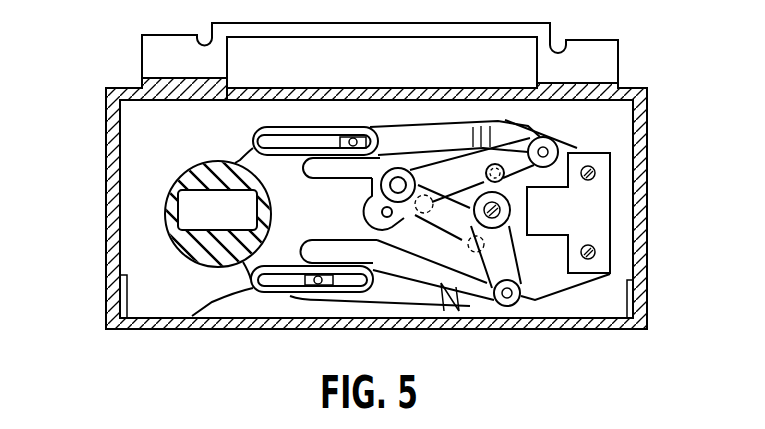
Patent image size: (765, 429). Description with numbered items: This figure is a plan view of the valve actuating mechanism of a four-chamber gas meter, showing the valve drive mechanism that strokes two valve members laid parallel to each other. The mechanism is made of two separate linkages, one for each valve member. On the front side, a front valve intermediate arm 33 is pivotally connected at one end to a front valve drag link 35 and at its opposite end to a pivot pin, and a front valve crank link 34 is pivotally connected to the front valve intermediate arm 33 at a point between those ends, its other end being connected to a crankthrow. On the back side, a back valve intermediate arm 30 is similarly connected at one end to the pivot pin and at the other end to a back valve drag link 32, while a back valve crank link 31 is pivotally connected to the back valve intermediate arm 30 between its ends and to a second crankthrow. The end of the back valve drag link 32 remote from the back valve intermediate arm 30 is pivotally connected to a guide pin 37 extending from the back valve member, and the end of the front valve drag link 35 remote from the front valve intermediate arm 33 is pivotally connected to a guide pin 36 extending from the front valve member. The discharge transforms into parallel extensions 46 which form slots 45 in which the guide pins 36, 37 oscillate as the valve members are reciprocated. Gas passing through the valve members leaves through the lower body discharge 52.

The back valve intermediate arm 30 is at (493, 262).
The back valve crank link 31 is at (452, 228).
The back valve drag link 32 is at (400, 292).
The front valve intermediate arm 33 is at (530, 142).
The front valve crank link 34 is at (457, 180).
The front valve drag link 35 is at (407, 142).
The guide pin 36 is at (356, 141).
The guide pin 37 is at (314, 285).
The slots 45 is at (293, 143).
The parallel extensions 46 is at (268, 125).
The lower body discharge 52 is at (188, 205).